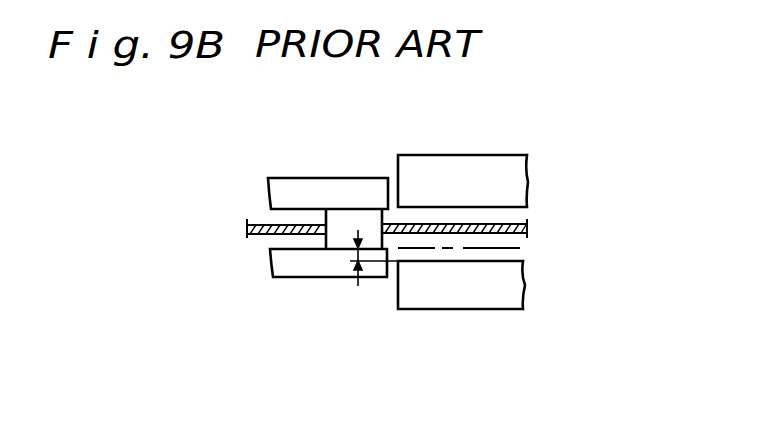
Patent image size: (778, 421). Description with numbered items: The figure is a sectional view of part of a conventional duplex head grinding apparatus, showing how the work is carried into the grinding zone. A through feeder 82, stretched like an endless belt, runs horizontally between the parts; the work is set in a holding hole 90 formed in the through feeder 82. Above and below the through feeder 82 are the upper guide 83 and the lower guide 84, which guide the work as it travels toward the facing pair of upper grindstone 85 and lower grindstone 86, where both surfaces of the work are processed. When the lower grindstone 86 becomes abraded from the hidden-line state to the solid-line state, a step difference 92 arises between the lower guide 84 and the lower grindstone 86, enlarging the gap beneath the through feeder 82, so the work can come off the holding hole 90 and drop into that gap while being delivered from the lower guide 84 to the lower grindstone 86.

The through feeder 82 is at (255, 222).
The upper guide 83 is at (313, 200).
The lower guide 84 is at (290, 272).
The upper grindstone 85 is at (453, 175).
The lower grindstone 86 is at (463, 297).
The holding hole 90 is at (326, 229).
The step difference 92 is at (358, 248).